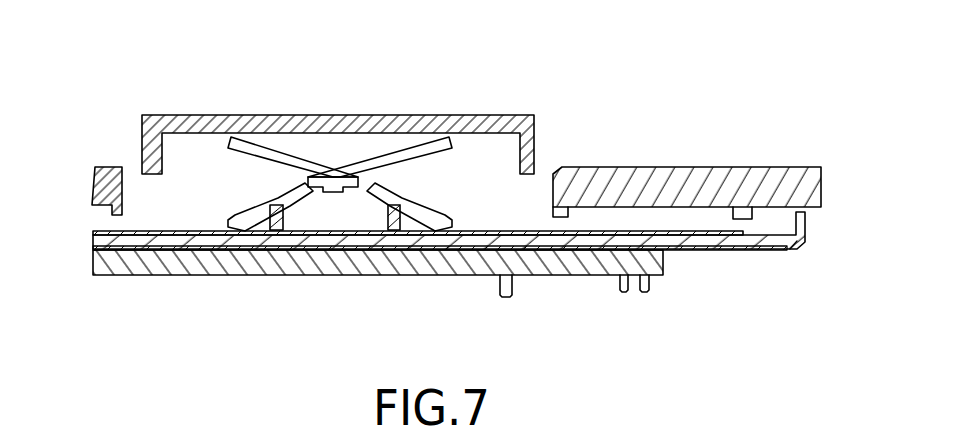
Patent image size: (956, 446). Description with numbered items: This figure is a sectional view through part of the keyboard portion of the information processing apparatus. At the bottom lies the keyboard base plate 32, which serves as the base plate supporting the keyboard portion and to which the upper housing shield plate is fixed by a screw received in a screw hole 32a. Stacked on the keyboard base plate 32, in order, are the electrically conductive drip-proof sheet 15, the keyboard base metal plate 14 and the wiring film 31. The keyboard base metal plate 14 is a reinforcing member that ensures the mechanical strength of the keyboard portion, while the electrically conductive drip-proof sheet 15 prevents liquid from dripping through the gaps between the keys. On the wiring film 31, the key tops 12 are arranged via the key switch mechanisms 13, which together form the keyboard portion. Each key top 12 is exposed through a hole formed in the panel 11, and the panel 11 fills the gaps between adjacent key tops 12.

The panel 11 is at (100, 175).
The key top 12 is at (479, 126).
The key switch mechanism 13 is at (388, 160).
The keyboard base metal plate 14 is at (733, 238).
The electrically conductive drip-proof sheet 15 is at (689, 250).
The wiring film 31 is at (588, 233).
The keyboard base plate 32 is at (463, 262).
The screw hole 32a is at (637, 292).